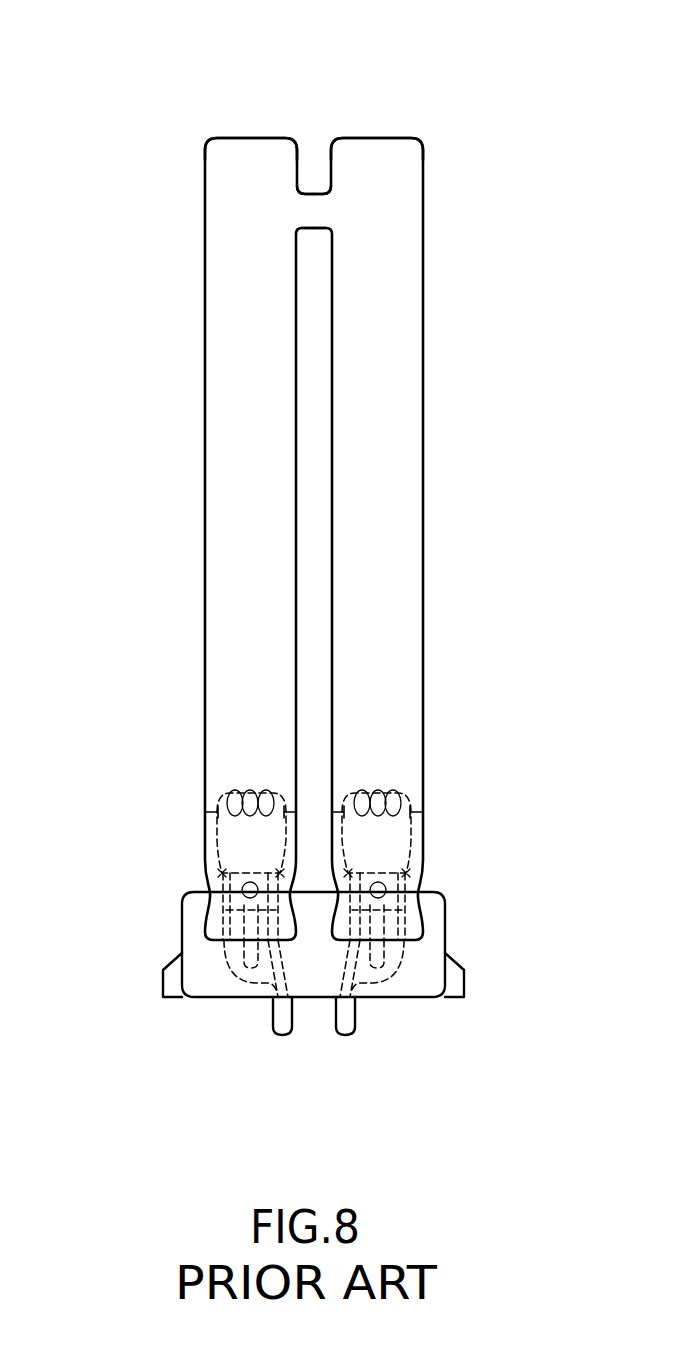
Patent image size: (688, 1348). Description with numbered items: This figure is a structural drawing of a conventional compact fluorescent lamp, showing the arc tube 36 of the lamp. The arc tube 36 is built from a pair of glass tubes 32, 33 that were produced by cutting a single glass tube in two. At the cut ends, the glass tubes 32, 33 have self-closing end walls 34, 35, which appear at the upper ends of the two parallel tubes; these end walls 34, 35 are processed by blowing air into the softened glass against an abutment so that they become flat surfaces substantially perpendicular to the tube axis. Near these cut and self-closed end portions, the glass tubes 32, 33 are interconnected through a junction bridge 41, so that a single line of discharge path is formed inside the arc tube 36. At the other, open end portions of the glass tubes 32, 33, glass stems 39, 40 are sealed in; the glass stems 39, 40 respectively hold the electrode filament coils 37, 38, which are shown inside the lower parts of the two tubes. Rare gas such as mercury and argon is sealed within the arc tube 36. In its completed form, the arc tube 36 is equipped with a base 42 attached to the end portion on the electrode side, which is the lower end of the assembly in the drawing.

The glass tube 32 is at (221, 338).
The glass tube 33 is at (414, 334).
The end wall 34 is at (258, 137).
The end wall 35 is at (388, 137).
The arc tube 36 is at (120, 76).
The electrode filament coil 37 is at (241, 793).
The electrode filament coil 38 is at (389, 793).
The glass stem 39 is at (216, 878).
The glass stem 40 is at (412, 878).
The junction bridge 41 is at (312, 206).
The base 42 is at (424, 992).